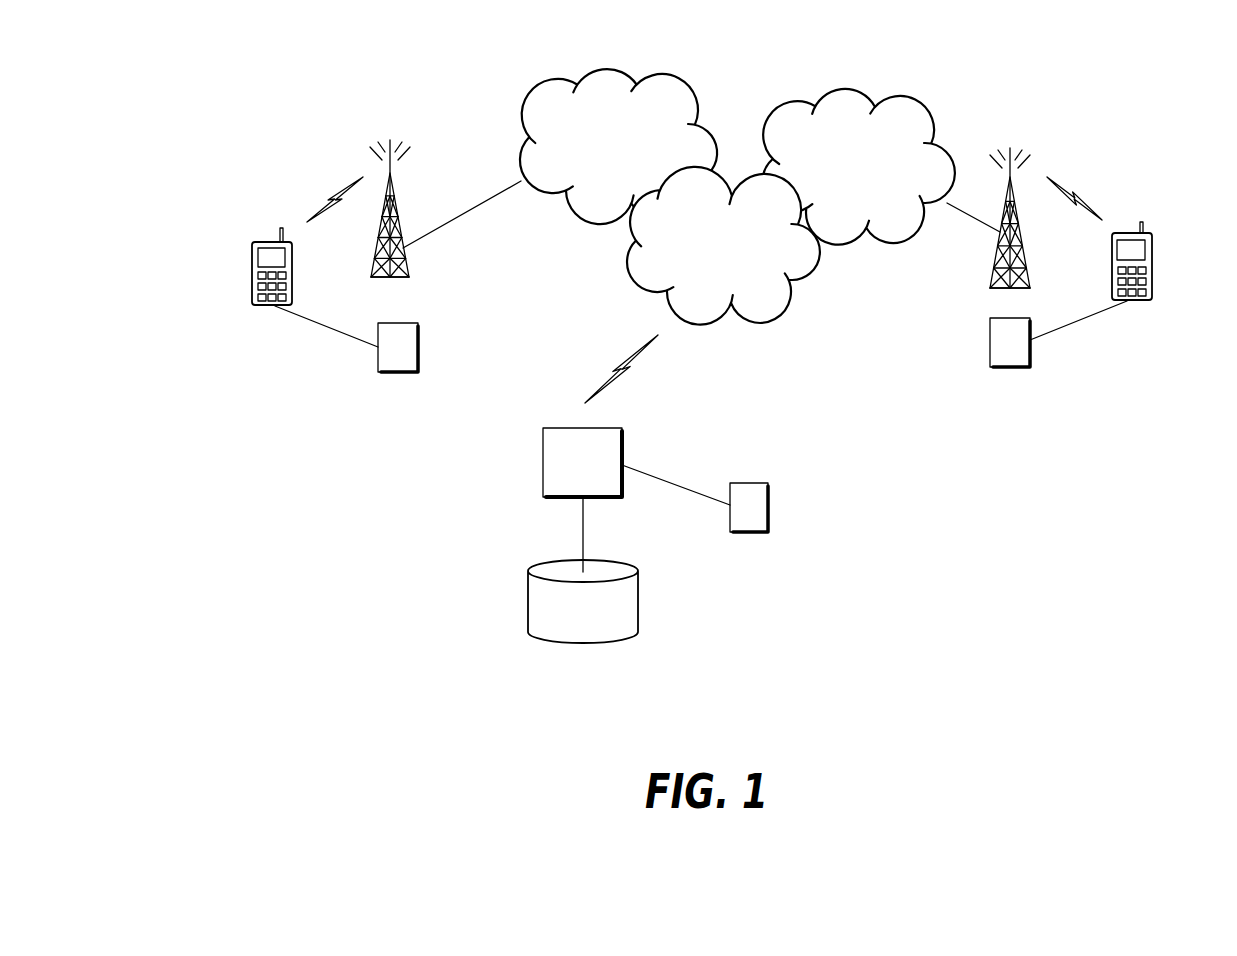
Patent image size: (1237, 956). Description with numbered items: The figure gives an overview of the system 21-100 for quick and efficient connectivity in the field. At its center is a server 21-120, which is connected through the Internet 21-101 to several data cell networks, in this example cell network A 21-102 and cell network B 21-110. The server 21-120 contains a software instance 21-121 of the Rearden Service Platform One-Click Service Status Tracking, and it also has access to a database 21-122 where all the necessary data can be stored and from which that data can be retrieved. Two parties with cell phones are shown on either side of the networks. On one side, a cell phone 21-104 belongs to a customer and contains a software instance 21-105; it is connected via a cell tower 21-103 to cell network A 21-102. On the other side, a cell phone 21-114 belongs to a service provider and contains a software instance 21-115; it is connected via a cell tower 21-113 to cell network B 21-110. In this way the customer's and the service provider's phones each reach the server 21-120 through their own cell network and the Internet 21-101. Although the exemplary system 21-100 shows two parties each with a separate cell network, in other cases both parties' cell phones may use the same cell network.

The system 21-100 is at (1070, 105).
The cell network B 21-110 is at (643, 132).
The cell network A 21-102 is at (883, 152).
The Internet 21-101 is at (752, 228).
The cell tower 21-113 is at (410, 264).
The cell tower 21-103 is at (990, 268).
The cell phone 21-114 is at (260, 241).
The cell phone 21-104 is at (1148, 233).
The software instance 21-115 is at (400, 323).
The software instance 21-105 is at (1007, 367).
The server 21-120 is at (543, 460).
The software instance 21-121 is at (748, 483).
The database 21-122 is at (585, 643).